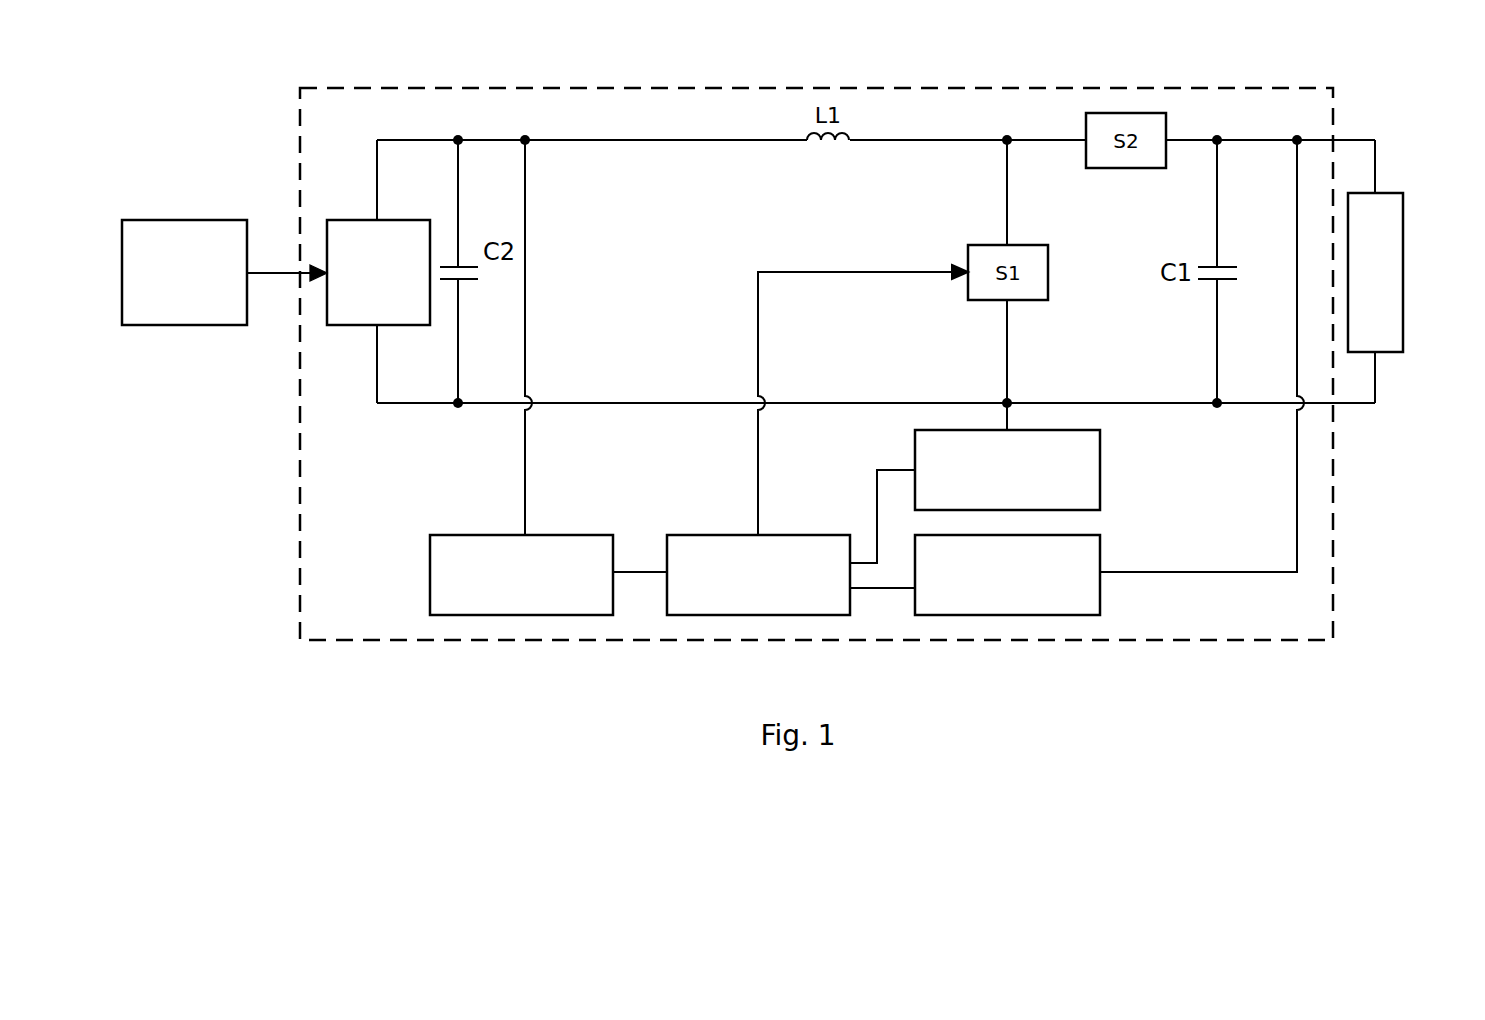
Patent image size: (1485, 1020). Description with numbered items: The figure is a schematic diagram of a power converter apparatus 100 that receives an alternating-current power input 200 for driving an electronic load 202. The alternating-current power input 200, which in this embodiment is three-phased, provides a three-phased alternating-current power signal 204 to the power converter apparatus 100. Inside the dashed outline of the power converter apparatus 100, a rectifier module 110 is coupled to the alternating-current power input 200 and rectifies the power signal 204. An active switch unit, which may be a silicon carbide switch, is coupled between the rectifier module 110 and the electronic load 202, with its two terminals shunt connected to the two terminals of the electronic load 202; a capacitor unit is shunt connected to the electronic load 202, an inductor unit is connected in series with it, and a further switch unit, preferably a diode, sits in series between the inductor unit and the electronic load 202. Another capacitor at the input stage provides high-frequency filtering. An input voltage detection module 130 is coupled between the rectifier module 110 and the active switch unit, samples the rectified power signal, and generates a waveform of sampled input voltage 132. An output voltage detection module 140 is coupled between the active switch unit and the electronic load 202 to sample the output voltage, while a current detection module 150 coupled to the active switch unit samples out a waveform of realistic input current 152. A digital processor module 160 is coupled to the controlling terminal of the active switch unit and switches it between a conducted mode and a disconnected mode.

The power converter apparatus 100 is at (455, 88).
The rectifier module 110 is at (365, 219).
The input voltage detection module 130 is at (483, 534).
The waveform of sampled input voltage 132 is at (628, 573).
The output voltage detection module 140 is at (1100, 556).
The current detection module 150 is at (1048, 430).
The waveform of realistic input current 152 is at (873, 500).
The digital processor module 160 is at (667, 545).
The alternating-current power input 200 is at (207, 219).
The electronic load 202 is at (1388, 192).
The three-phased alternating-current power signal 204 is at (285, 271).